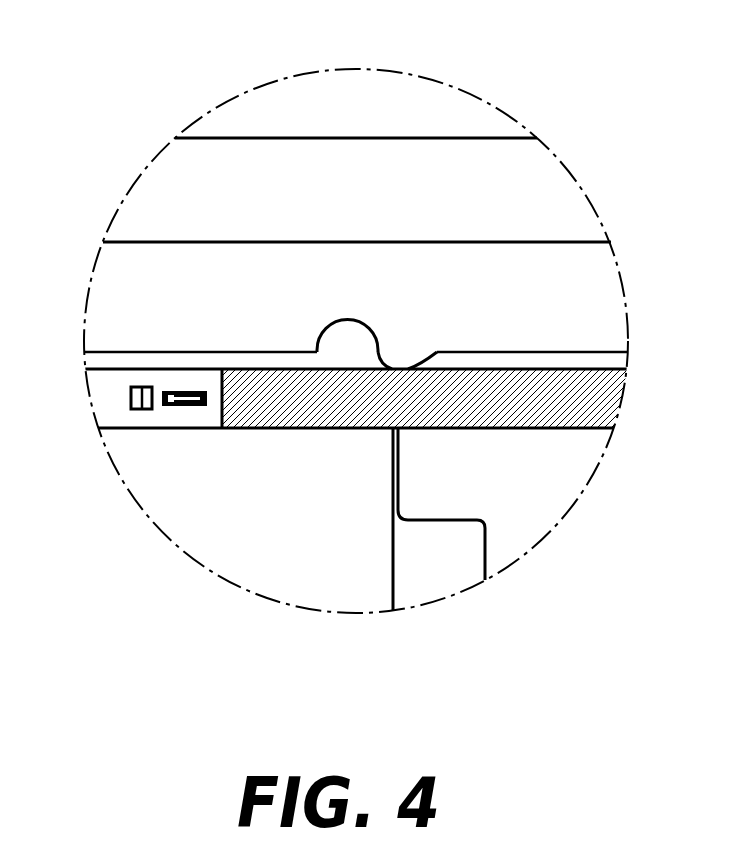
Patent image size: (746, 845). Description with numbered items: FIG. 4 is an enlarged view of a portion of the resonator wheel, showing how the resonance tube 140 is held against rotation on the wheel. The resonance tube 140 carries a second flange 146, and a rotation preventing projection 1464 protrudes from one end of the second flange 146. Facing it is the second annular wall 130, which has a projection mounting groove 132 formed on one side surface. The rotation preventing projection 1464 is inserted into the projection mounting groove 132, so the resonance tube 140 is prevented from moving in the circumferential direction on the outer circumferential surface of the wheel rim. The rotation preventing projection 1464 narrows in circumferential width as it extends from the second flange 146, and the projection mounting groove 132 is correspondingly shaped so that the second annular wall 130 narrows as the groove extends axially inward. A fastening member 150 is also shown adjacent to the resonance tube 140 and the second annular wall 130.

The second annular wall 130 is at (565, 302).
The projection mounting groove 132 is at (352, 343).
The rotation preventing projection 1464 is at (349, 324).
The second flange 146 is at (90, 356).
The fastening member 150 is at (600, 402).
The resonance tube 140 is at (522, 485).